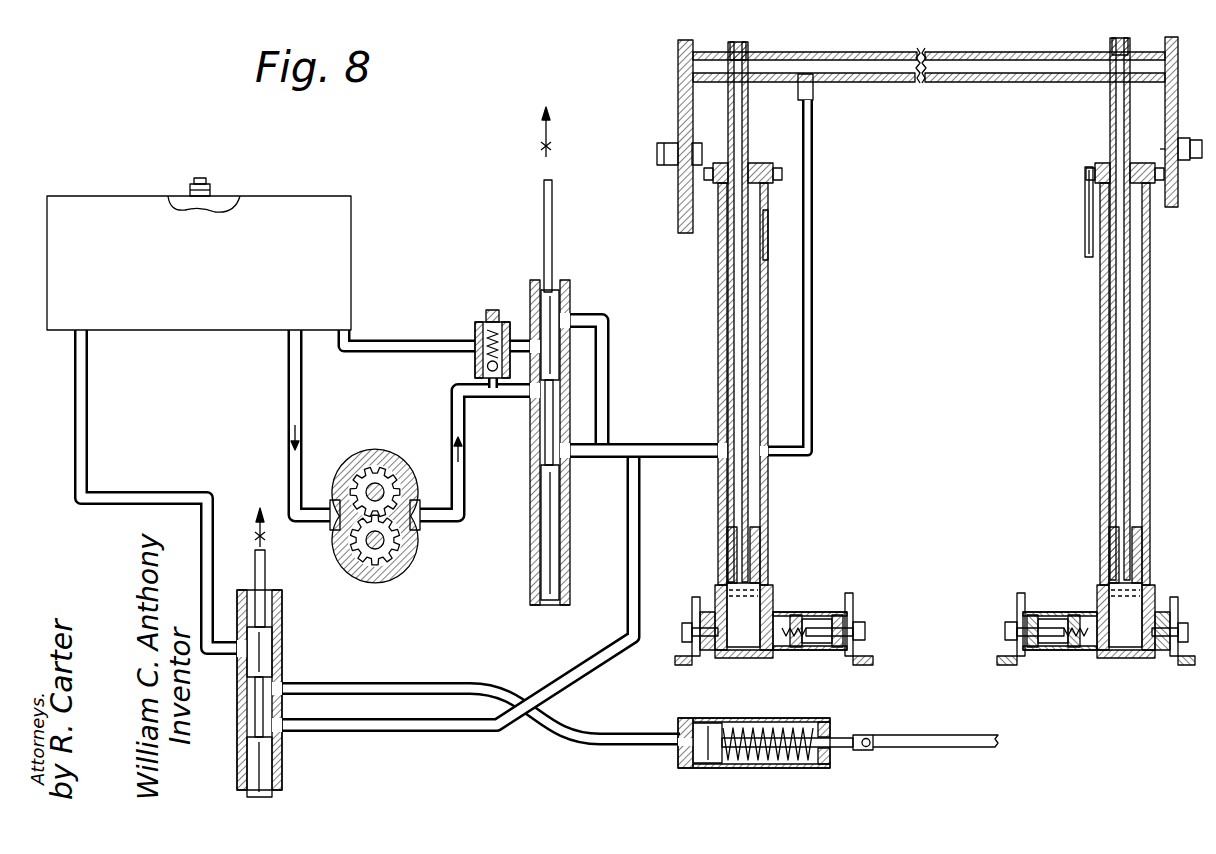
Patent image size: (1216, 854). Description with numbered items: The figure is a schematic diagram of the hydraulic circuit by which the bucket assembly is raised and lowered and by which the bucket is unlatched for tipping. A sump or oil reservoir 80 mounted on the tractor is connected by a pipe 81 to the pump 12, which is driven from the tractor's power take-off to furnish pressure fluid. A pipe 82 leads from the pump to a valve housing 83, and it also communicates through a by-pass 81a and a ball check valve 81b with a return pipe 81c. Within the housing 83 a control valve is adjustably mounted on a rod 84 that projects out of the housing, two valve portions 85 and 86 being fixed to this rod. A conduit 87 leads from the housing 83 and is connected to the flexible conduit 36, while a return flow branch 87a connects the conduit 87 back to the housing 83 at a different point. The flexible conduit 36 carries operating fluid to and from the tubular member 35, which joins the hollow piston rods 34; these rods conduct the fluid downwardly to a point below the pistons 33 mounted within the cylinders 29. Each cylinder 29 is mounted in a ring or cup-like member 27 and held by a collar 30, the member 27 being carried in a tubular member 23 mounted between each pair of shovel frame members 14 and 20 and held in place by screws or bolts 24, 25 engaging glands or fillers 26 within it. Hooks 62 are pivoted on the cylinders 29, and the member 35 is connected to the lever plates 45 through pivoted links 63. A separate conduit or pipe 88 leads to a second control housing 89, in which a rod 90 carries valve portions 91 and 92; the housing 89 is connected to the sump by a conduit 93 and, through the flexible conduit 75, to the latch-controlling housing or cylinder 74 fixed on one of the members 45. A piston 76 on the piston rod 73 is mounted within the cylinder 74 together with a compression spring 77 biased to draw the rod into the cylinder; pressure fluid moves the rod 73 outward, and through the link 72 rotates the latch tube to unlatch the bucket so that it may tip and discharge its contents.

The pump 12 is at (412, 560).
The shovel frame member 14 is at (695, 600).
The shovel frame member 20 is at (853, 598).
The tubular member 23 is at (822, 652).
The screw or bolt 24 is at (682, 633).
The screw or bolt 25 is at (866, 633).
The gland or filler 26 is at (705, 612).
The ring or cup-like member 27 is at (778, 613).
The cylinder 29 is at (718, 392).
The collar 30 is at (765, 600).
The piston 33 is at (757, 548).
The piston rod 34 is at (748, 110).
The tubular member 35 is at (906, 83).
The flexible conduit 36 is at (814, 181).
The lever plate 45 is at (678, 85).
The hook 62 is at (770, 245).
The pivoted link 63 is at (694, 112).
The link 72 is at (918, 735).
The piston rod 73 is at (840, 737).
The housing 74 is at (755, 718).
The flexible conduit 75 is at (474, 684).
The piston 76 is at (707, 722).
The compression spring 77 is at (748, 765).
The sump or oil reservoir 80 is at (338, 273).
The pipe 81 is at (288, 398).
The by-pass 81a is at (462, 384).
The ball check valve 81b is at (477, 366).
The return pipe 81c is at (398, 343).
The pipe 82 is at (466, 471).
The valve housing 83 is at (572, 292).
The rod 84 is at (554, 226).
The valve portion 85 is at (545, 310).
The valve portion 86 is at (553, 553).
The conduit 87 is at (583, 459).
The return flow branch 87a is at (612, 352).
The conduit or pipe 88 is at (641, 521).
The second control housing 89 is at (283, 657).
The rod 90 is at (266, 560).
The valve portion 91 is at (264, 633).
The valve portion 92 is at (268, 770).
The conduit 93 is at (144, 492).